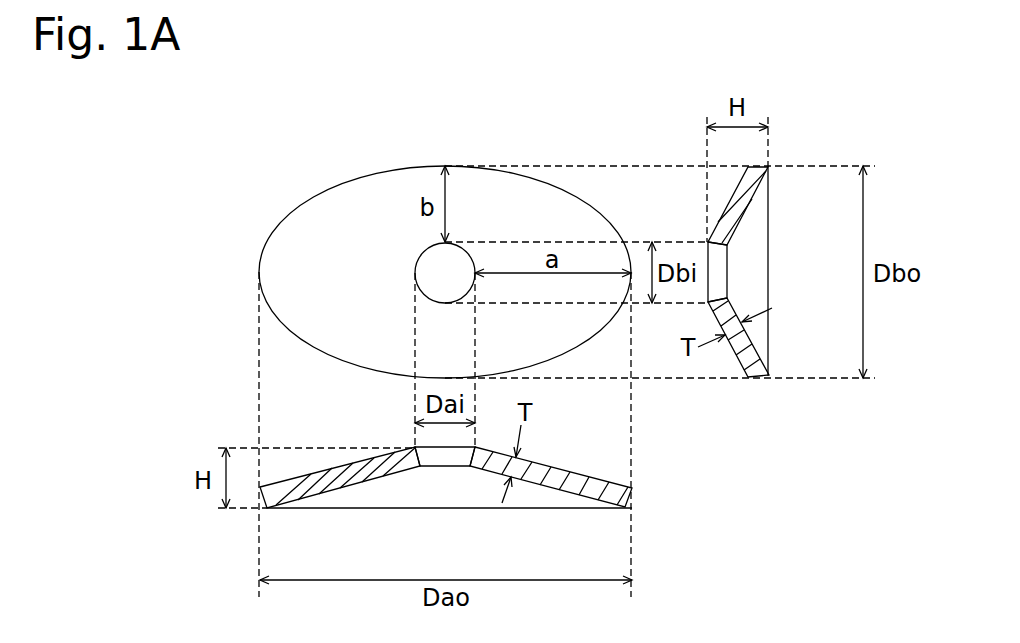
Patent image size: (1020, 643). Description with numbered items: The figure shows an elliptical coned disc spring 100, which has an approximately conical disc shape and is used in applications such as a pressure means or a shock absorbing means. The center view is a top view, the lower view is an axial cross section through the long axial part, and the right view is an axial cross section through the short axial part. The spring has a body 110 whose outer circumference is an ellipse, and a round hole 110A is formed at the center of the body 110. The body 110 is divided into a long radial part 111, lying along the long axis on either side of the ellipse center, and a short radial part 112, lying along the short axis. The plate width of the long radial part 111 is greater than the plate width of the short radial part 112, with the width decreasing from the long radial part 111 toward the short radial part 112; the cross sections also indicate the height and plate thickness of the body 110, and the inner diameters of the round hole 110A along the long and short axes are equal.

The elliptical coned disc spring 100 is at (545, 145).
The body 110 is at (373, 195).
The hole 110A is at (462, 265).
The long radial part 111 is at (350, 278).
The short radial part 112 is at (437, 355).